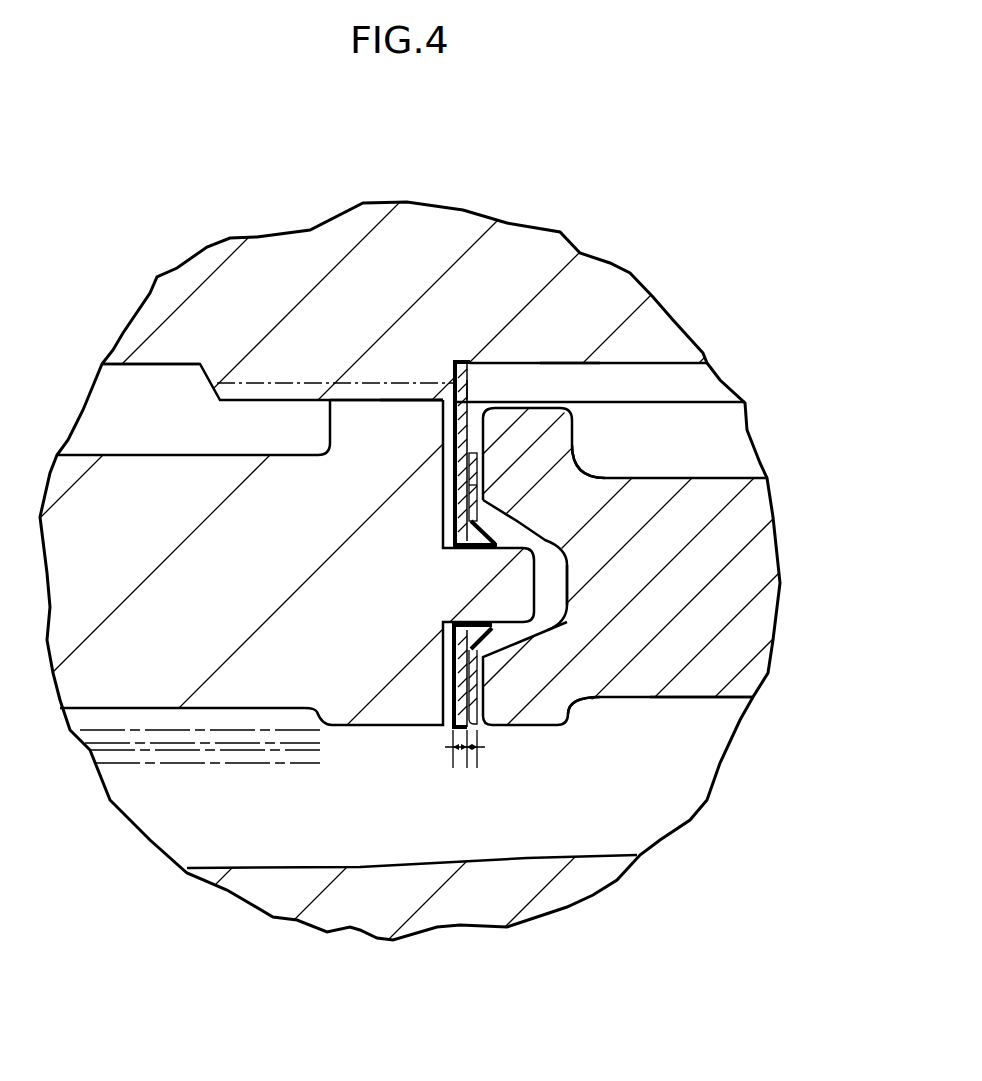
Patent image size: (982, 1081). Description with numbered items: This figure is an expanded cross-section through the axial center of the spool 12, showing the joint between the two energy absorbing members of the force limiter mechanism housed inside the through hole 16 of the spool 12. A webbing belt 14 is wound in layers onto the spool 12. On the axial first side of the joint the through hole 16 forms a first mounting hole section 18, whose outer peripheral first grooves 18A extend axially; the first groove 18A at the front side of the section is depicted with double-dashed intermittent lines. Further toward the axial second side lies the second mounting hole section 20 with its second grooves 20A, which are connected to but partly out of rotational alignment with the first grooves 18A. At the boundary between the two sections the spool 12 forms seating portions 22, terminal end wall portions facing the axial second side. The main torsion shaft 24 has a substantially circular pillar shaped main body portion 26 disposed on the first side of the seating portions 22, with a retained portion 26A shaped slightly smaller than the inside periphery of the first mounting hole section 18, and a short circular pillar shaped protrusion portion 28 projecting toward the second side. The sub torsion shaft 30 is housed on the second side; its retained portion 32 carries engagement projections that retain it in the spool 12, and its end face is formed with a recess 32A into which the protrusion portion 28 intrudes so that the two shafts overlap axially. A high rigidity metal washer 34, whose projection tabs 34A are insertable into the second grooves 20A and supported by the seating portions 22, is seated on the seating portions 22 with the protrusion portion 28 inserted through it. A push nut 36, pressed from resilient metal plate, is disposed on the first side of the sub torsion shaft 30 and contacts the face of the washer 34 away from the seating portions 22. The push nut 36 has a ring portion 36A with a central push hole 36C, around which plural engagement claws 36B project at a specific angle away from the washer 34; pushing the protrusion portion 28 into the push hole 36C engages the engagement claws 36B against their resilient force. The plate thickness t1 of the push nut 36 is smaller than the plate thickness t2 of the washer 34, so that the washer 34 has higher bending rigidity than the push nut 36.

The spool 12 is at (280, 253).
The webbing belt 14 is at (143, 763).
The through hole 16 is at (178, 370).
The first mounting hole section 18 is at (380, 405).
The first groove 18A is at (263, 383).
The second mounting hole section 20 is at (640, 373).
The second groove 20A is at (567, 372).
The seating portion 22 is at (468, 360).
The main torsion shaft 24 is at (200, 713).
The main body portion 26 is at (140, 453).
The retained portion 26A is at (403, 395).
The protrusion portion 28 is at (567, 608).
The sub torsion shaft 30 is at (693, 700).
The retained portion 32 is at (538, 730).
The recess 32A is at (567, 558).
The washer 34 is at (443, 683).
The projection tab 34A is at (471, 395).
The push nut 36 is at (480, 697).
The ring portion 36A is at (480, 492).
The engagement claw 36B is at (603, 479).
The push hole 36C is at (497, 556).
The plate thickness of the push nut t1 is at (472, 768).
The plate thickness of the washer t2 is at (460, 768).